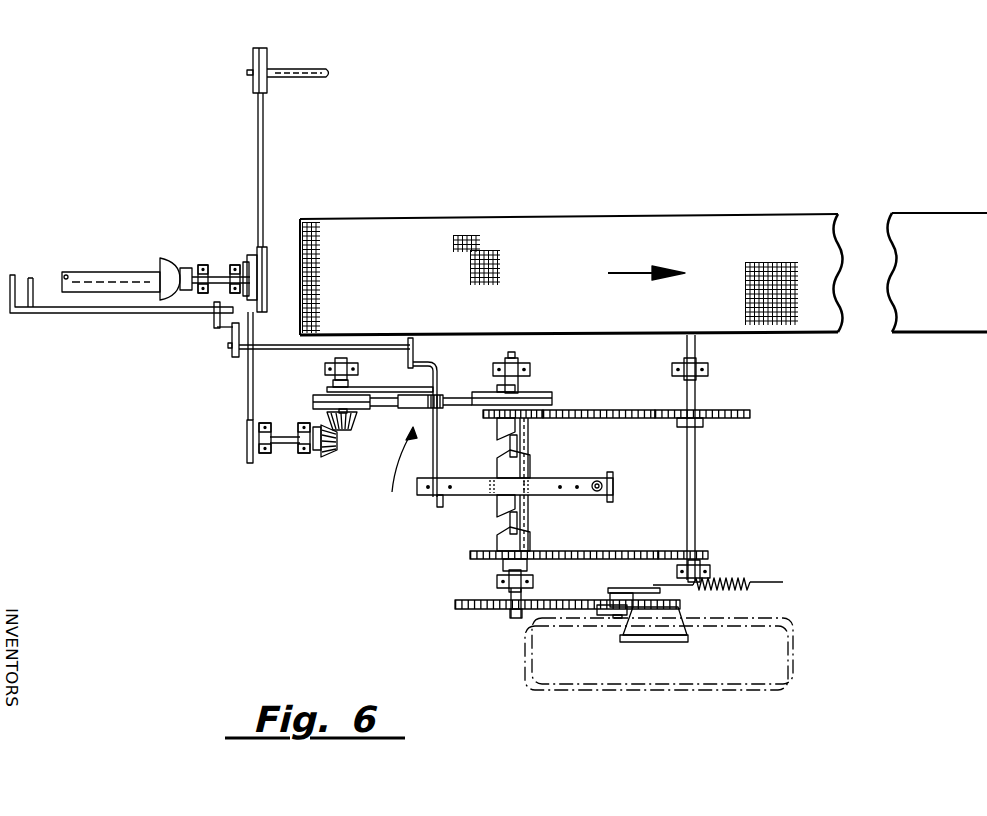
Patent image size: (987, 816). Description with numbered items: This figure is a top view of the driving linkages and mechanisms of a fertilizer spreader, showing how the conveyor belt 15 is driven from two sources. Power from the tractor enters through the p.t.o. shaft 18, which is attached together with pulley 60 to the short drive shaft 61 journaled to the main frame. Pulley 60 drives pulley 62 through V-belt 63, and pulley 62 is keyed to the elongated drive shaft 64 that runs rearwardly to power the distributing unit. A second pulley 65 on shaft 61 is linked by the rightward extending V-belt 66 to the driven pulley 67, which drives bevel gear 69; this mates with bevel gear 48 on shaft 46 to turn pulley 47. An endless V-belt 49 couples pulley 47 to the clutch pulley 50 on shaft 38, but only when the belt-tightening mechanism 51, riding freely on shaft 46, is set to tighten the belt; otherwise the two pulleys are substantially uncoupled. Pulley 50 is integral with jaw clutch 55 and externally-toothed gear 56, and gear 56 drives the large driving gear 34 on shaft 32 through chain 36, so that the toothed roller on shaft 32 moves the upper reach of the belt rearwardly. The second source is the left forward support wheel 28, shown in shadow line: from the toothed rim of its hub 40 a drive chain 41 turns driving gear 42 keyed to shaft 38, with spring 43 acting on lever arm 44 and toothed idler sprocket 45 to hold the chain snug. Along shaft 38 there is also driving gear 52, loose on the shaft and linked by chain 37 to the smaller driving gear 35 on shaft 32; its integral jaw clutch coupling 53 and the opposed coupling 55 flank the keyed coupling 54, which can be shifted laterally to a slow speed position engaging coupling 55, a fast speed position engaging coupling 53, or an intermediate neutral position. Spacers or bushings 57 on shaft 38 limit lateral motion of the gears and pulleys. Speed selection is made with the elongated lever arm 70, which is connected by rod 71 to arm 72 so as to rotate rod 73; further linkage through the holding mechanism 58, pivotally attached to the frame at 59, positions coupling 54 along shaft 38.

The conveyor belt 15 is at (763, 213).
The p.t.o. shaft 18 is at (92, 272).
The left forward ground engaging support wheel 28 is at (740, 690).
The shaft 32 is at (698, 457).
The driving gear 34 is at (740, 408).
The driving gear 35 is at (702, 550).
The chain 36 is at (605, 410).
The chain 37 is at (617, 550).
The shaft 38 is at (510, 358).
The hub 40 is at (660, 640).
The drive chain 41 is at (455, 605).
The driving gear 42 is at (473, 612).
The spring 43 is at (740, 578).
The lever arm 44 is at (620, 588).
The toothed idler sprocket 45 is at (607, 613).
The shaft 46 is at (342, 367).
The pulley 47 is at (318, 397).
The bevel gear 48 is at (347, 430).
The endless V-belt 49 is at (388, 407).
The clutch pulley 50 is at (533, 392).
The belt-tightening mechanism 51 is at (401, 432).
The driving gear 52 is at (470, 553).
The separable coupling 53 is at (527, 532).
The coupling 54 is at (497, 503).
The coupling 55 is at (505, 442).
The externally-toothed gear 56 is at (535, 420).
The spacers or bushings 57 is at (502, 392).
The holding mechanism 58 is at (437, 507).
The pivot 59 is at (598, 492).
The pulley 60 is at (270, 250).
The short drive shaft 61 is at (218, 272).
The pulley 62 is at (255, 57).
The V-belt 63 is at (257, 127).
The elongated drive shaft 64 is at (312, 70).
The pulley 65 is at (248, 263).
The V-belt 66 is at (248, 400).
The driven pulley 67 is at (247, 453).
The bevel gear 69 is at (335, 430).
The lever arm 70 is at (65, 315).
The rod 71 is at (215, 323).
The arm 72 is at (233, 357).
The rod 73 is at (307, 352).